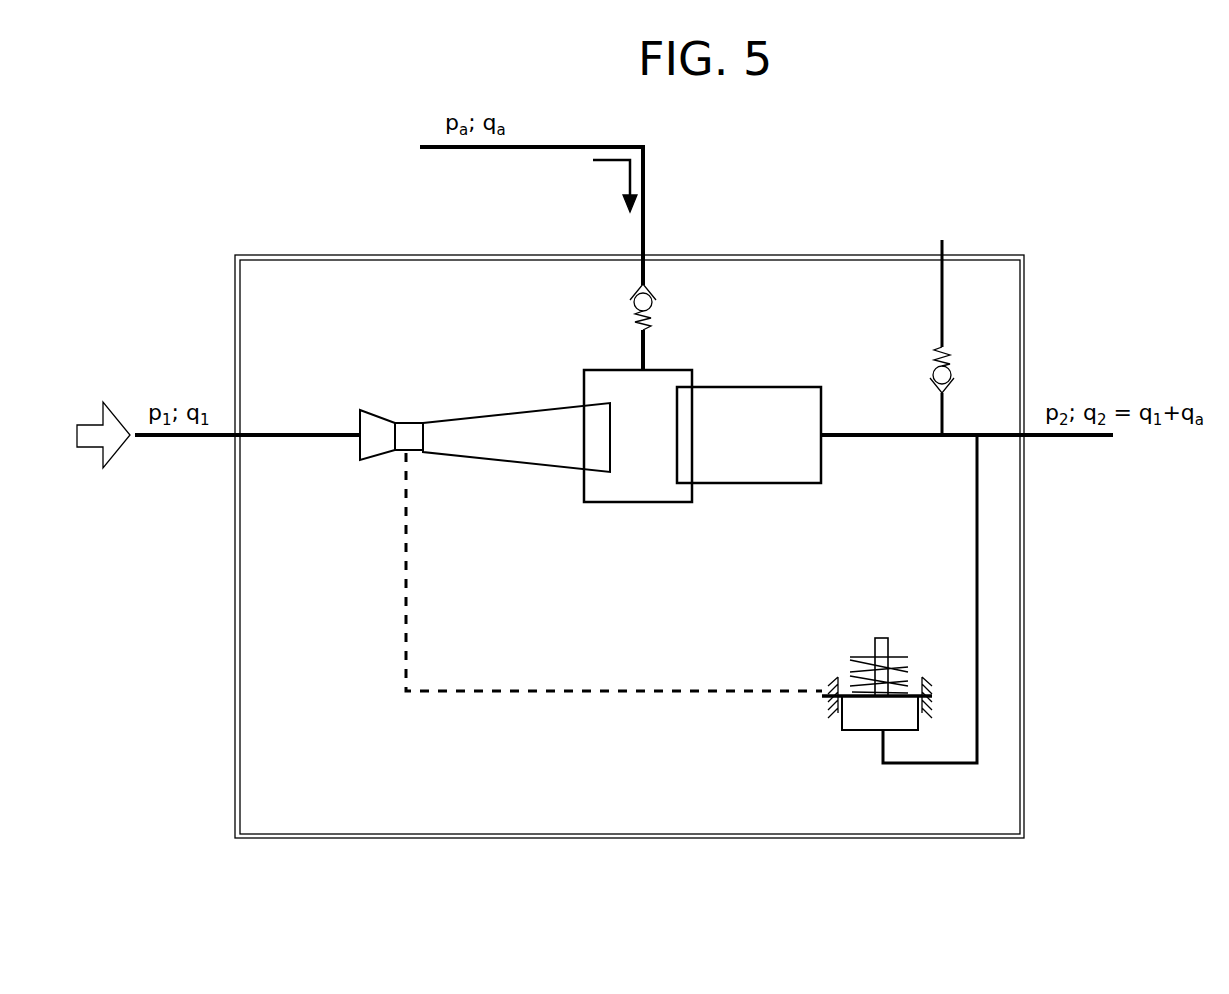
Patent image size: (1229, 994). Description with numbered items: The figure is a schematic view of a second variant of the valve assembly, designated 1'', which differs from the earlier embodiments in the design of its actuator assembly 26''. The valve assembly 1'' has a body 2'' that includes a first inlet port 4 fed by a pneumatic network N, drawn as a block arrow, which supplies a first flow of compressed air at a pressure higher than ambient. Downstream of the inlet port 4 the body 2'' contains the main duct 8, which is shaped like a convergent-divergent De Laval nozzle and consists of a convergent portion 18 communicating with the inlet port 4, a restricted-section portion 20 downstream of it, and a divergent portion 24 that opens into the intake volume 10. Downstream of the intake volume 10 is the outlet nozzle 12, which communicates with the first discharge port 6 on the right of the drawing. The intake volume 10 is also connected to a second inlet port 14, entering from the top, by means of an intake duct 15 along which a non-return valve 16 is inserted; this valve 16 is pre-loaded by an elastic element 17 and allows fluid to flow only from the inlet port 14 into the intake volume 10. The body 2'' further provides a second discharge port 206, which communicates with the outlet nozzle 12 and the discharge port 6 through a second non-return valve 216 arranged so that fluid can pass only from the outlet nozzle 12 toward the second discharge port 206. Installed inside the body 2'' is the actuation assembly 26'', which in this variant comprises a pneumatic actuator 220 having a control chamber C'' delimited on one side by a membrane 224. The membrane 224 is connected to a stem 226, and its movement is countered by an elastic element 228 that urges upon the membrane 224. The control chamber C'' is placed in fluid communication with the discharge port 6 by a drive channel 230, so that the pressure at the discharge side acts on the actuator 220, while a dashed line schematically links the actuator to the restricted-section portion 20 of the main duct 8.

The valve assembly 1'' is at (973, 155).
The body 2'' is at (654, 531).
The first inlet port 4 is at (238, 433).
The first discharge port 6 is at (1024, 438).
The main duct 8 is at (463, 444).
The intake volume 10 is at (630, 504).
The outlet nozzle 12 is at (780, 486).
The second inlet port 14 is at (645, 256).
The intake duct 15 is at (662, 314).
The non-return valve 16 is at (656, 313).
The elastic element 17 is at (682, 334).
The convergent portion 18 is at (355, 452).
The restricted-section portion 20 is at (410, 438).
The divergent portion 24 is at (485, 462).
The second discharge port 206 is at (940, 252).
The second non-return valve 216 is at (957, 362).
The pneumatic actuator 220 is at (862, 648).
The membrane 224 is at (905, 693).
The stem 226 is at (885, 648).
The elastic element 228 is at (898, 690).
The drive channel 230 is at (975, 513).
The actuator assembly 26'' is at (881, 652).
The control chamber C'' is at (856, 728).
The pneumatic network N is at (90, 420).